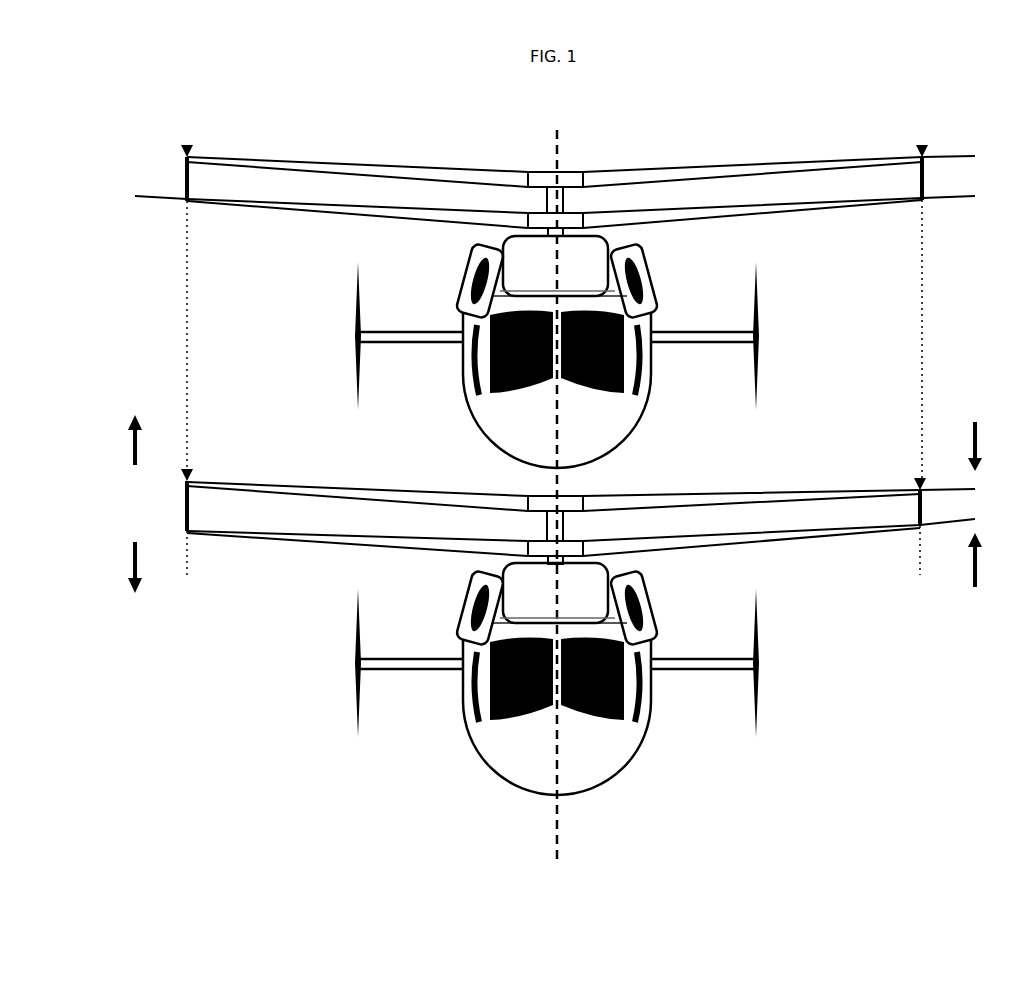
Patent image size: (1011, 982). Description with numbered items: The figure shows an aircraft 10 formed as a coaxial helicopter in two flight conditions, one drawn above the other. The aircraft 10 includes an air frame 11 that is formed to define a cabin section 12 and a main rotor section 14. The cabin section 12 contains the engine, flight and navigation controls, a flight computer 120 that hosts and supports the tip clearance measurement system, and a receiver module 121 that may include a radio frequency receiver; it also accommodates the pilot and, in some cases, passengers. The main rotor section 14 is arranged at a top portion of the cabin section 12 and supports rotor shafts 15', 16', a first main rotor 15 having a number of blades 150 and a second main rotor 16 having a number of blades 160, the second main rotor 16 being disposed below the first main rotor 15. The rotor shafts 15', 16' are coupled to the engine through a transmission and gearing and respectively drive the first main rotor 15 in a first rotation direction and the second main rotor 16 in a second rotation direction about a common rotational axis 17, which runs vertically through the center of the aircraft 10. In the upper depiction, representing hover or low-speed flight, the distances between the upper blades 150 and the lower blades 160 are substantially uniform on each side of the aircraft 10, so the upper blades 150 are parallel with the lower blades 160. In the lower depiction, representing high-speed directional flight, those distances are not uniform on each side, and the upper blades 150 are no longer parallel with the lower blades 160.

The aircraft 10 is at (459, 415).
The air frame 11 is at (487, 443).
The cabin section 12 is at (556, 531).
The main rotor section 14 is at (532, 270).
The first main rotor 15 is at (581, 310).
The second main rotor 16 is at (555, 332).
The rotor shaft 15' is at (595, 323).
The rotor shaft 16' is at (615, 335).
The rotational axis 17 is at (557, 842).
The flight computer 120 is at (563, 291).
The receiver module 121 is at (592, 273).
The blades 150 is at (187, 157).
The blades 160 is at (187, 201).